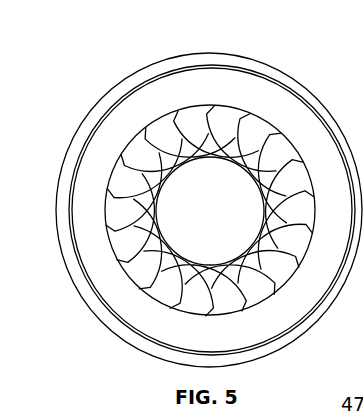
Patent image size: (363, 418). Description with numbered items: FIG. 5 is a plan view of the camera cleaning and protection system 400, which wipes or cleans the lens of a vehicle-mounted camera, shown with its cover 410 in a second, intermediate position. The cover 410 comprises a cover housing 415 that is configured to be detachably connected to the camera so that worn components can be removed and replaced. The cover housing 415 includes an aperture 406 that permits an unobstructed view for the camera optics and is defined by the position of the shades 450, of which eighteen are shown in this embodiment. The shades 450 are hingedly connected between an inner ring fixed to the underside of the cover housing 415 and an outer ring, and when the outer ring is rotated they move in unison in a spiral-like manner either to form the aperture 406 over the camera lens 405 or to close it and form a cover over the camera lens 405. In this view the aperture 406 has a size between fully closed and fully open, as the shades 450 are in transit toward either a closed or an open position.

The camera cleaning and protection system 400 is at (97, 53).
The camera lens 405 is at (233, 193).
The aperture 406 is at (190, 130).
The cover 410 is at (97, 104).
The cover housing 415 is at (88, 252).
The shades 450 is at (140, 280).